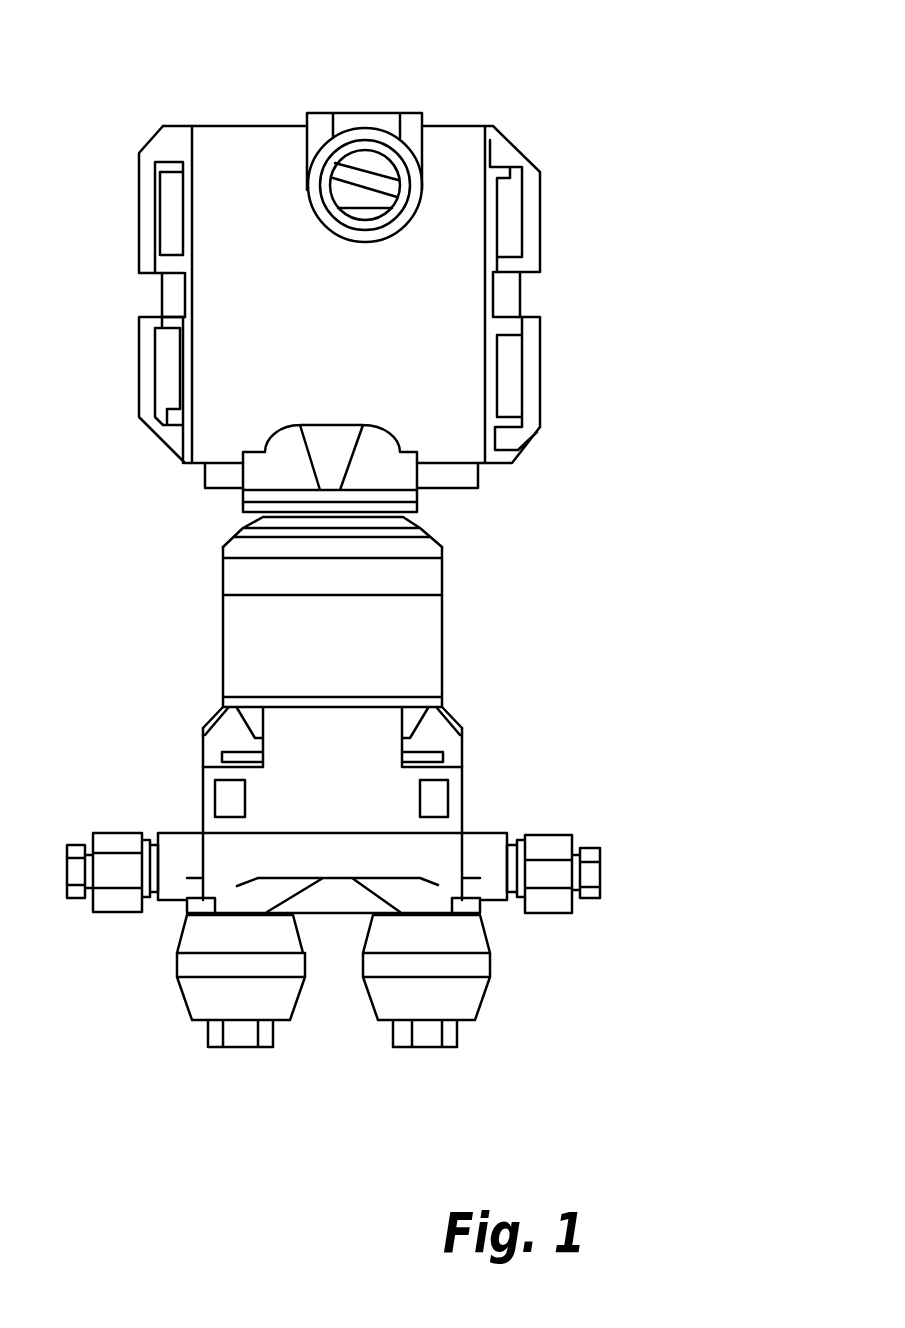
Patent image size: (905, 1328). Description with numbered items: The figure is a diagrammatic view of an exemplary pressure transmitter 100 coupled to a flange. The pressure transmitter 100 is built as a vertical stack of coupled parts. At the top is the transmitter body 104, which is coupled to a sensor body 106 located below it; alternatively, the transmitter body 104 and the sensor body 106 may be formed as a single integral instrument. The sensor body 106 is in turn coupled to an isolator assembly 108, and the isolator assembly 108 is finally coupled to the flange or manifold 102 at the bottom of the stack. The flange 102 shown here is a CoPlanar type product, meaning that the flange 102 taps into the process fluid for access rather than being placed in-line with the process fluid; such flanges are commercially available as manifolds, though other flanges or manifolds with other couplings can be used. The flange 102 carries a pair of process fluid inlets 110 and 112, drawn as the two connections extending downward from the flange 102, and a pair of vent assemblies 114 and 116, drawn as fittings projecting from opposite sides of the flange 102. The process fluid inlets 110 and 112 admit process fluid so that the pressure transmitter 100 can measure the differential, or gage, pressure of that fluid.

The pressure transmitter 100 is at (492, 101).
The flange 102 is at (463, 833).
The transmitter body 104 is at (258, 126).
The sensor body 106 is at (442, 607).
The isolator assembly 108 is at (203, 757).
The process fluid inlet 110 is at (233, 1030).
The process fluid inlet 112 is at (423, 1030).
The vent assembly 114 is at (115, 900).
The vent assembly 116 is at (548, 898).